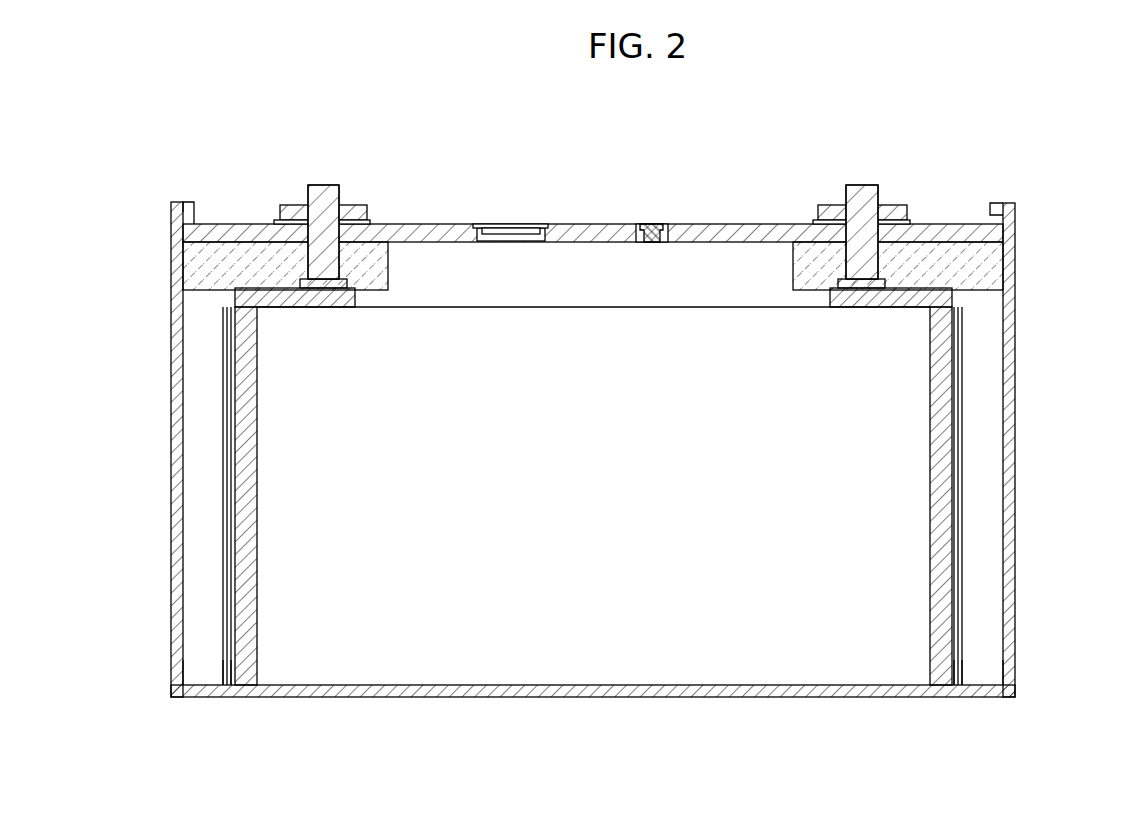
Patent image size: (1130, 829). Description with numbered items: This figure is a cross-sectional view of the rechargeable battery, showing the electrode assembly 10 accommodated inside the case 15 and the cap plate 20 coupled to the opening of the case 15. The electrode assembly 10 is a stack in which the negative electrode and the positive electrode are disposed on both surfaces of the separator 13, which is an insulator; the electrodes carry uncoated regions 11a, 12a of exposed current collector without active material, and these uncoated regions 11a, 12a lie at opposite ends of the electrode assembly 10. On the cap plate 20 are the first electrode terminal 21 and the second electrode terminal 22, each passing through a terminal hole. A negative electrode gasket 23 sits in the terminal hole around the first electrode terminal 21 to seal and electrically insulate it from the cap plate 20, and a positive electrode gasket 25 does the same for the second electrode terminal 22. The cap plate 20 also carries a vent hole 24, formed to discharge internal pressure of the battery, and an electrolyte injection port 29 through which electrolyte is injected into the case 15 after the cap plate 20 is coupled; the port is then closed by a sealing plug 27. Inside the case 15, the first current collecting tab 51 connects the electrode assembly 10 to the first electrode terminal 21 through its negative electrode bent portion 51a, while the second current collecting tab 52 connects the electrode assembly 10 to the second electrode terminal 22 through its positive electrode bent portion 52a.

The electrode assembly 10 is at (573, 665).
The uncoated region 11a is at (230, 665).
The uncoated region 12a is at (947, 662).
The separator 13 is at (230, 665).
The case 15 is at (1008, 348).
The cap plate 20 is at (450, 232).
The first electrode terminal 21 is at (326, 163).
The second electrode terminal 22 is at (862, 160).
The negative electrode gasket 23 is at (292, 243).
The vent hole 24 is at (523, 232).
The positive electrode gasket 25 is at (898, 244).
The sealing plug 27 is at (657, 225).
The electrolyte injection port 29 is at (648, 225).
The first current collecting tab 51 is at (248, 495).
The negative electrode bent portion 51a is at (345, 275).
The second current collecting tab 52 is at (942, 448).
The positive electrode bent portion 52a is at (892, 275).